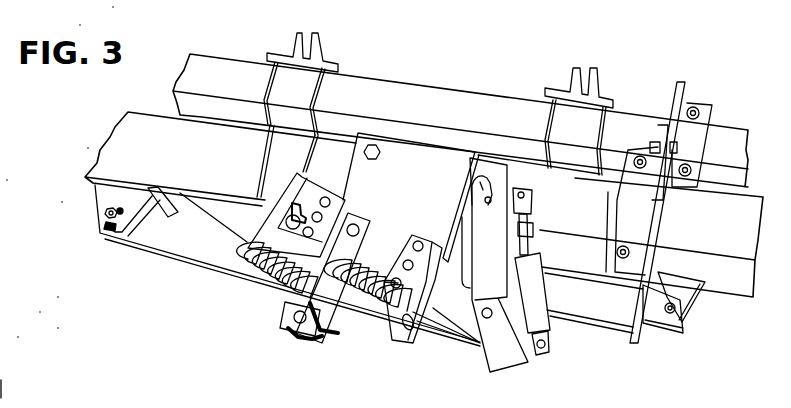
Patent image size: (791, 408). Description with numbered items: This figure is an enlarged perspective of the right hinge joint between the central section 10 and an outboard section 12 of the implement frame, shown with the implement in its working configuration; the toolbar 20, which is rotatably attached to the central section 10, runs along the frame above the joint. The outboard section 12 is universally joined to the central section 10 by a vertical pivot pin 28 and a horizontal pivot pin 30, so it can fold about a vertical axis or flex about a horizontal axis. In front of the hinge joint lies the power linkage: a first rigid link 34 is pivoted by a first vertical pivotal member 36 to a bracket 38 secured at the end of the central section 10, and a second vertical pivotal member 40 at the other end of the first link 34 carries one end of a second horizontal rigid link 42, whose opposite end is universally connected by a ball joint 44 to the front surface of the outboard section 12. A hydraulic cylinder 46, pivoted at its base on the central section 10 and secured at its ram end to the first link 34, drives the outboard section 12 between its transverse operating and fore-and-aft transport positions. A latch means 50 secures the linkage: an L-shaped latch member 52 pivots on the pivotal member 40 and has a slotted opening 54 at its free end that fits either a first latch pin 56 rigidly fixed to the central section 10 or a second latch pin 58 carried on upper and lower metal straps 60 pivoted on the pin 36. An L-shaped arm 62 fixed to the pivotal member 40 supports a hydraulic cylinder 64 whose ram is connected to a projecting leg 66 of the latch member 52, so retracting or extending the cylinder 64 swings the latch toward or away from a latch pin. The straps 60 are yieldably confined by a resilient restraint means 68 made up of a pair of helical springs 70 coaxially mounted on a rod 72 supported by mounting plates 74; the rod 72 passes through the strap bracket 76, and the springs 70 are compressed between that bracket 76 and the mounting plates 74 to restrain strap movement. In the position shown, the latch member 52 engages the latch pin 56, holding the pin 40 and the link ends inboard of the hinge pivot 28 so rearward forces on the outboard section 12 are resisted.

The central section 10 is at (730, 292).
The outboard section 12 is at (165, 121).
The toolbar 20 is at (460, 97).
The vertical pivot pin 28 is at (380, 153).
The horizontal pivot pin 30 is at (330, 168).
The first rigid link 34 is at (462, 310).
The first vertical pivotal member 36 is at (353, 222).
The bracket 38 is at (463, 156).
The second vertical pivotal member 40 is at (486, 358).
The second horizontal rigid link 42 is at (140, 245).
The ball joint 44 is at (104, 213).
The hydraulic cylinder 46 is at (582, 318).
The latch means 50 is at (547, 281).
The L-shaped latch member 52 is at (500, 255).
The slotted opening 54 is at (483, 198).
The first latch pin 56 is at (488, 173).
The second latch pin 58 is at (292, 317).
The metal straps 60 is at (292, 330).
The L-shaped arm 62 is at (507, 360).
The hydraulic cylinder 64 is at (543, 304).
The projecting leg 66 is at (529, 189).
The resilient restraint means 68 is at (381, 268).
The helical springs 70 is at (271, 287).
The rod 72 is at (418, 335).
The mounting plates 74 is at (262, 223).
The strap bracket 76 is at (340, 316).